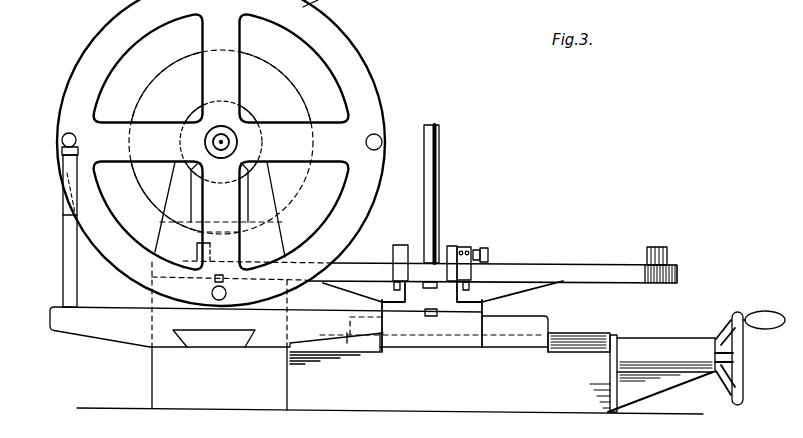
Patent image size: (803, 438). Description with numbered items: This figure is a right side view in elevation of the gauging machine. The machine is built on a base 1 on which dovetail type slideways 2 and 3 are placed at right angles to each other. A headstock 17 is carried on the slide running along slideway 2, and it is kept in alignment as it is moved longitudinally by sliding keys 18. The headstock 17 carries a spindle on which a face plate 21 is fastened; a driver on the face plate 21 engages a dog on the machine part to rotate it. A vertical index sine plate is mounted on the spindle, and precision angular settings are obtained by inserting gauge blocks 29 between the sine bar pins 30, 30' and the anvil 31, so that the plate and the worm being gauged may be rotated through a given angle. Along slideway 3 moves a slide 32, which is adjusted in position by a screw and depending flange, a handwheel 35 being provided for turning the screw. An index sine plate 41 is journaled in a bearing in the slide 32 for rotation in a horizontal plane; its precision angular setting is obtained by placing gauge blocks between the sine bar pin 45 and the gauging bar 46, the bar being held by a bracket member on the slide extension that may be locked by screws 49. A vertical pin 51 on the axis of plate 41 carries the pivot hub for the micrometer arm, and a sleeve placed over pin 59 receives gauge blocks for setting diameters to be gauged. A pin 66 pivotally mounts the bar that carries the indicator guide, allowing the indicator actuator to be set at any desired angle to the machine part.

The base 1 is at (390, 347).
The slideway 2 is at (222, 349).
The slideway 3 is at (585, 336).
The headstock 17 is at (195, 108).
The sliding keys 18 is at (232, 271).
The face plate 21 is at (166, 69).
The gauge blocks 29 is at (66, 230).
The sine bar pins 30 is at (217, 125).
The pin 30' is at (234, 292).
The anvil 31 is at (130, 331).
The slide 32 is at (518, 322).
The handwheel 35 is at (744, 355).
The index sine plate 41 is at (553, 264).
The sine bar pin 45 is at (428, 243).
The gauging bar 46 is at (452, 245).
The screws 49 is at (486, 252).
The vertical pin 51 is at (437, 124).
The pin 59 is at (658, 247).
The pin 66 is at (197, 252).